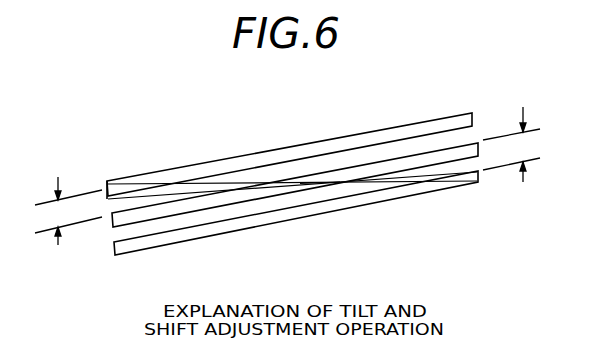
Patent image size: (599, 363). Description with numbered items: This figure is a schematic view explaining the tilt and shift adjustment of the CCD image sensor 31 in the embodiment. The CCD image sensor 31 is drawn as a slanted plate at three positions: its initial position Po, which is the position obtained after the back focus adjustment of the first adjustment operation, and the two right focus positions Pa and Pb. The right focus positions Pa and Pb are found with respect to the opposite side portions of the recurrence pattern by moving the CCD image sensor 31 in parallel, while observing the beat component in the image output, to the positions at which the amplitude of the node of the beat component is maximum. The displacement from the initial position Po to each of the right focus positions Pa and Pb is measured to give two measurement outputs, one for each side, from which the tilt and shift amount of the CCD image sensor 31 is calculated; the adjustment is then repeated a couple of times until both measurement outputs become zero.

The CCD image sensor 31 is at (111, 223).
The right focus position Pa is at (147, 185).
The initial position Po is at (307, 181).
The right focus position Pb is at (467, 178).